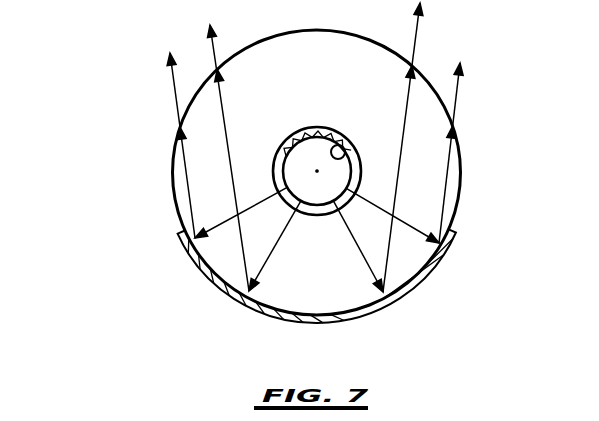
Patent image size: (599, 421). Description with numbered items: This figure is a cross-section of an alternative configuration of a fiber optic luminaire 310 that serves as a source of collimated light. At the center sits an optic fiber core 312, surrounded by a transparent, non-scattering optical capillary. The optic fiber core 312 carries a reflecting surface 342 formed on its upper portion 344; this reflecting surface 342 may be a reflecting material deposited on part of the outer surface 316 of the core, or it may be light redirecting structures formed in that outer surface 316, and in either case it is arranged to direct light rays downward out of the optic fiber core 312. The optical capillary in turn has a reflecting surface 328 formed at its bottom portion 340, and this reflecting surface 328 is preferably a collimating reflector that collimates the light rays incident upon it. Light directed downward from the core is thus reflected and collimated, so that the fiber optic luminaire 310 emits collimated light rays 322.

The fiber optic luminaire 310 is at (130, 173).
The optic fiber core 312 is at (333, 170).
The outer surface 316 is at (352, 177).
The collimated light rays 322 is at (207, 52).
The reflecting surface 328 is at (345, 320).
The bottom portion 340 is at (456, 237).
The reflecting surface 342 is at (293, 137).
The upper portion 344 is at (345, 150).